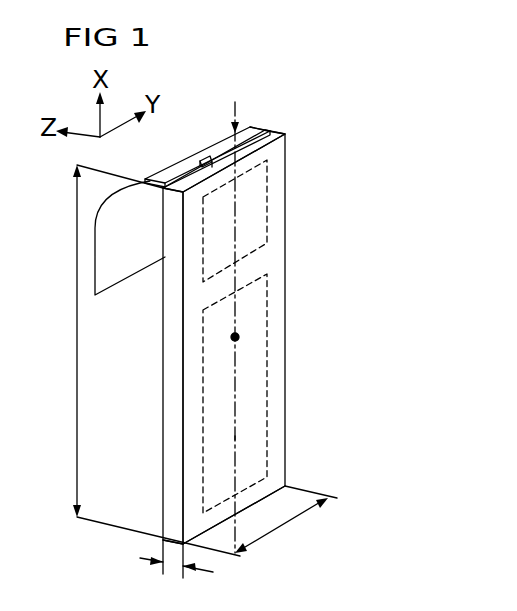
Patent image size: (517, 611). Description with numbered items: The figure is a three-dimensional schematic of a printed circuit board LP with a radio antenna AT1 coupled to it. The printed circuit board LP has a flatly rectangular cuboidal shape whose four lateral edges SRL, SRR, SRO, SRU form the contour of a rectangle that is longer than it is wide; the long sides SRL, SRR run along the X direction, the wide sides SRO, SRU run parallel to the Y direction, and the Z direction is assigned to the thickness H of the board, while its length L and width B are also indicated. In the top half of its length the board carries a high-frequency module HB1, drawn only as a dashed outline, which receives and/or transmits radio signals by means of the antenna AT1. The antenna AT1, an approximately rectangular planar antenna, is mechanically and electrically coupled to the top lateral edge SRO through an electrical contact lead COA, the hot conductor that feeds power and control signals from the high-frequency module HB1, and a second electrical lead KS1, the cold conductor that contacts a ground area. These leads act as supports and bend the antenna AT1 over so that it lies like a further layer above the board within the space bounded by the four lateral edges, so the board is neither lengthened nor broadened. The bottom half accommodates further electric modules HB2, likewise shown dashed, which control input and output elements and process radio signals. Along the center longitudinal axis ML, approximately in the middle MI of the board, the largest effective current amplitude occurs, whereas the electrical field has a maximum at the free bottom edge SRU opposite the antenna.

The second electrical lead KS1 is at (205, 160).
The top lateral edge SRO is at (266, 130).
The electrical contact lead COA is at (287, 140).
The high-frequency module HB1 is at (268, 200).
The right lateral edge SRR is at (287, 270).
The middle of the printed circuit board MI is at (238, 337).
The printed circuit board LP is at (250, 378).
The evaluation/control module HB2 is at (267, 435).
The bottom lateral edge SRU is at (252, 512).
The width B is at (287, 528).
The thickness H is at (168, 565).
The antenna AT1 is at (128, 250).
The length L is at (76, 347).
The left lateral edge SRL is at (178, 352).
The center longitudinal axis ML is at (235, 438).